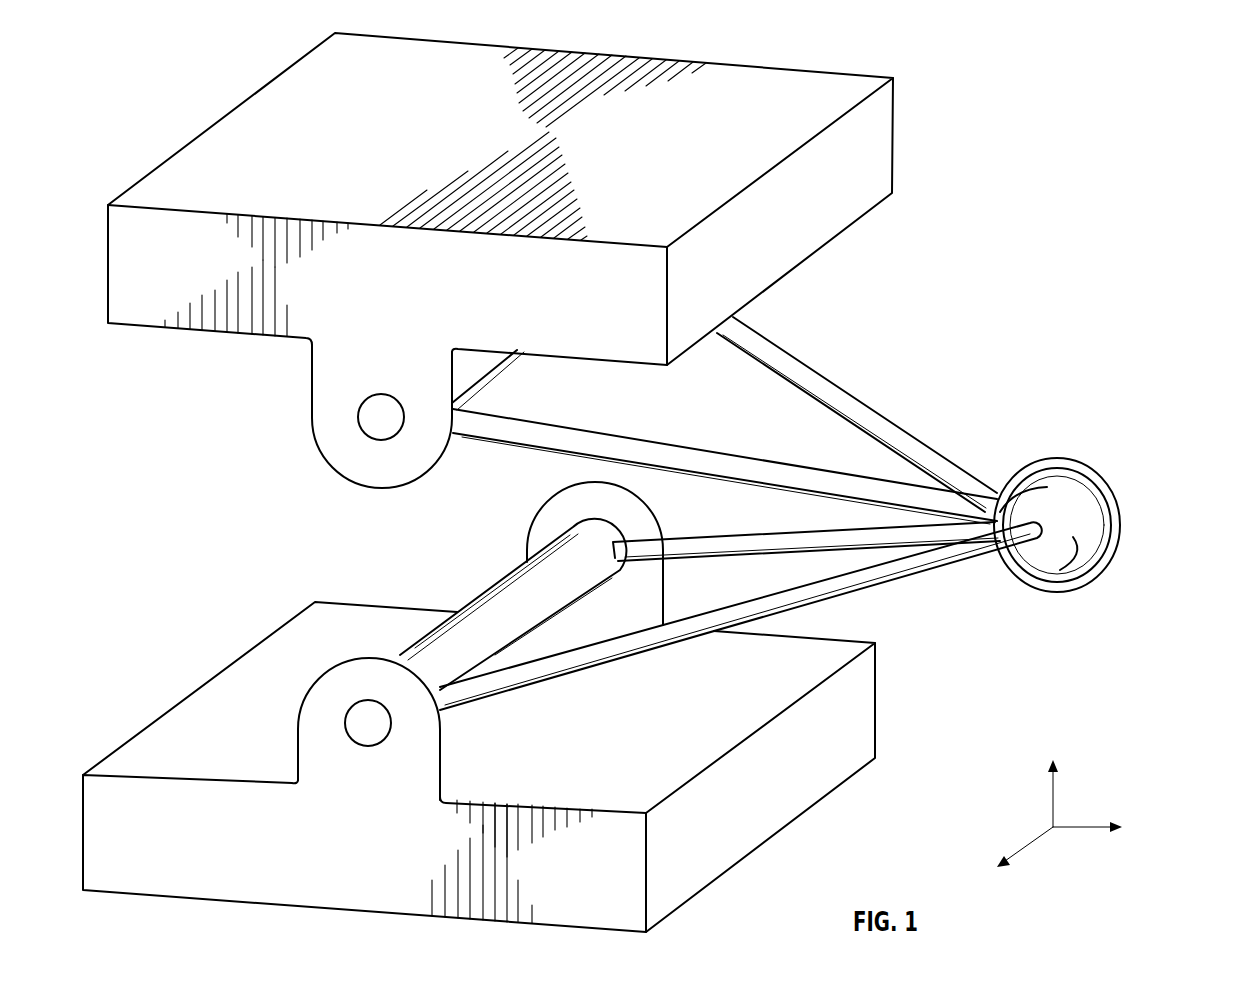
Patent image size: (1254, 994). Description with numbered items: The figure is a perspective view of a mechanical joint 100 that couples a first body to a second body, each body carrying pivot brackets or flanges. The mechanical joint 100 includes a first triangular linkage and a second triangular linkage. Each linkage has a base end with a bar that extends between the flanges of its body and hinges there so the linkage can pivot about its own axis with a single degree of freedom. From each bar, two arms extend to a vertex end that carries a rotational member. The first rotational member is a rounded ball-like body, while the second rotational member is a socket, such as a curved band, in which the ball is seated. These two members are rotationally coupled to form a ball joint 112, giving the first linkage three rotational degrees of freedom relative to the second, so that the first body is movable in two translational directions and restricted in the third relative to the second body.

The mechanical joint 100 is at (1018, 172).
The ball joint 112 is at (1133, 500).